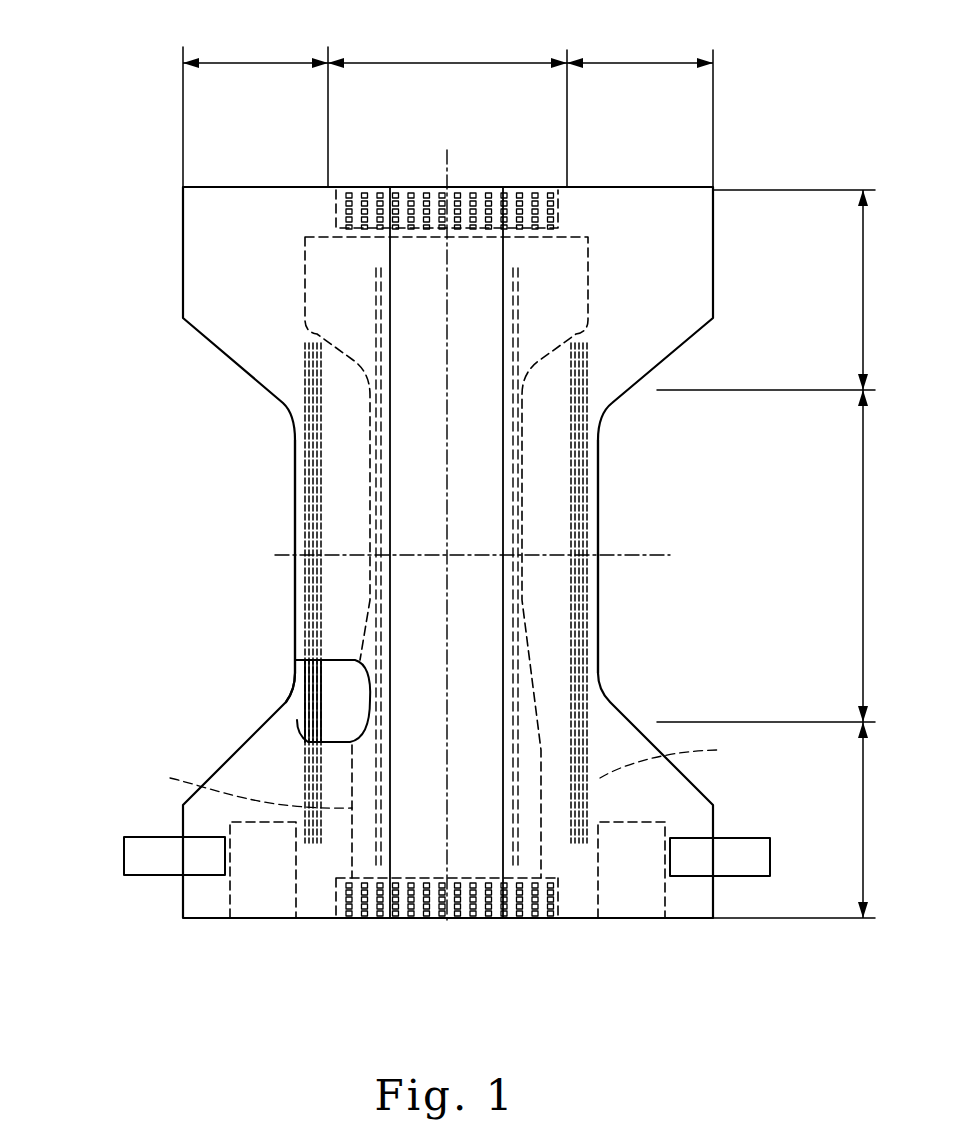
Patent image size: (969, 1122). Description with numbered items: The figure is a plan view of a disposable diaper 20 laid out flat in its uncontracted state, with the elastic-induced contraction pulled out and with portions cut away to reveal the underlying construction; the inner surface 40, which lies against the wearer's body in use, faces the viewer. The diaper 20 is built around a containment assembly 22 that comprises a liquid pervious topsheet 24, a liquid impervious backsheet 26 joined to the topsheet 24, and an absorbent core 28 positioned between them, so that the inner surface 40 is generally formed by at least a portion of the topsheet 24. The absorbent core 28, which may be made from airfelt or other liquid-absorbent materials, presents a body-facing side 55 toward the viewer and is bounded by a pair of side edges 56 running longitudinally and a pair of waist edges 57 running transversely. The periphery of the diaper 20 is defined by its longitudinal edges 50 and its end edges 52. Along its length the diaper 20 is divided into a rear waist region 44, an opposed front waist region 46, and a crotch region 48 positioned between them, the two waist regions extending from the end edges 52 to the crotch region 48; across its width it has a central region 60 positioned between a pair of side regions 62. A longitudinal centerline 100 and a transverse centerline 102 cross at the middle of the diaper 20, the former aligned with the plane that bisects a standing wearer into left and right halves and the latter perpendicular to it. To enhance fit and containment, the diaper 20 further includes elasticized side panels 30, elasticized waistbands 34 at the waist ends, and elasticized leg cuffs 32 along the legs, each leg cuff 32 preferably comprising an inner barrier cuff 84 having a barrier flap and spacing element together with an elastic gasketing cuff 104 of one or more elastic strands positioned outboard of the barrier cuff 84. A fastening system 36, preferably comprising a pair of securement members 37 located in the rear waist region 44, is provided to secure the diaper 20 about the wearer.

The diaper 20 is at (150, 178).
The containment assembly 22 is at (405, 348).
The topsheet 24 is at (475, 445).
The backsheet 26 is at (358, 733).
The absorbent core 28 is at (360, 707).
The elasticized side panels 30 is at (265, 900).
The elasticized leg cuffs 32 is at (596, 584).
The elasticized waistbands 34 is at (532, 195).
The fastening system 36 is at (120, 893).
The securement members 37 is at (157, 865).
The inner surface 40 is at (475, 530).
The rear waist region 44 is at (863, 820).
The front waist region 46 is at (863, 290).
The crotch region 48 is at (863, 560).
The longitudinal edges 50 is at (295, 463).
The end edges 52 is at (397, 190).
The body-facing side 55 is at (297, 708).
The side edges 56 is at (447, 773).
The waist edges 57 is at (572, 237).
The central region 60 is at (448, 60).
The side regions 62 is at (258, 60).
The inner barrier cuff 84 is at (522, 665).
The longitudinal centerline 100 is at (447, 160).
The transverse centerline 102 is at (660, 553).
The elastic gasketing cuff 104 is at (588, 700).